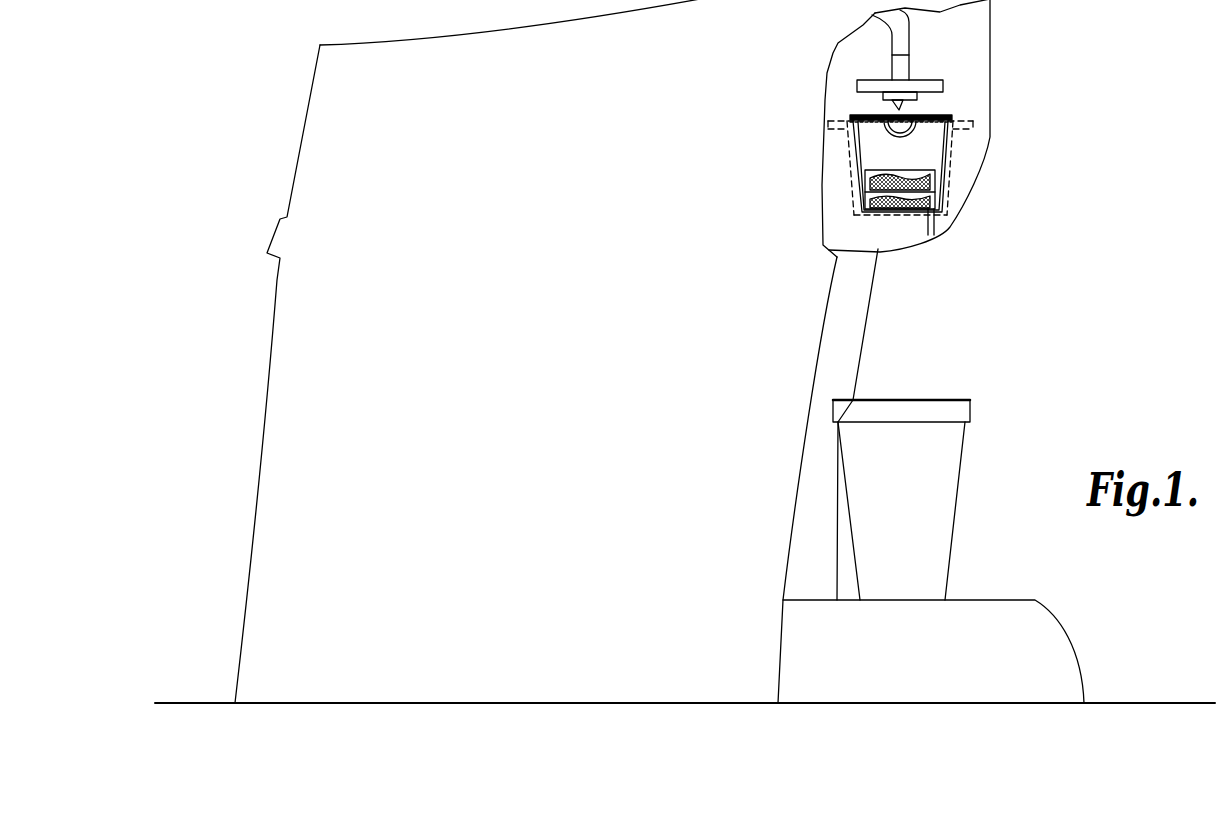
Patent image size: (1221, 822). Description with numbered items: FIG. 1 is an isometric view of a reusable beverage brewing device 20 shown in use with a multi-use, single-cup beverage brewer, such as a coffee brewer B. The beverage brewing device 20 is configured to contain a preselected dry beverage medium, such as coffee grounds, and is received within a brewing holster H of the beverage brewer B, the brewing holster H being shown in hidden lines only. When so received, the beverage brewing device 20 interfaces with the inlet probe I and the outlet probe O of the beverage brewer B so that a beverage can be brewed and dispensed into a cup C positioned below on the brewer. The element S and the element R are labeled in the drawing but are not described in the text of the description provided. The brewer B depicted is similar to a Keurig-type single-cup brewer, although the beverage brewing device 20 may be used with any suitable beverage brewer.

The coffee brewer B is at (300, 105).
The water supply / dispensing head S is at (917, 95).
The inlet probe I is at (903, 108).
The brewing holster H is at (970, 126).
The recess / receiving portion R is at (908, 133).
The beverage brewing device 20 is at (946, 161).
The outlet probe O is at (934, 228).
The cup C is at (962, 452).